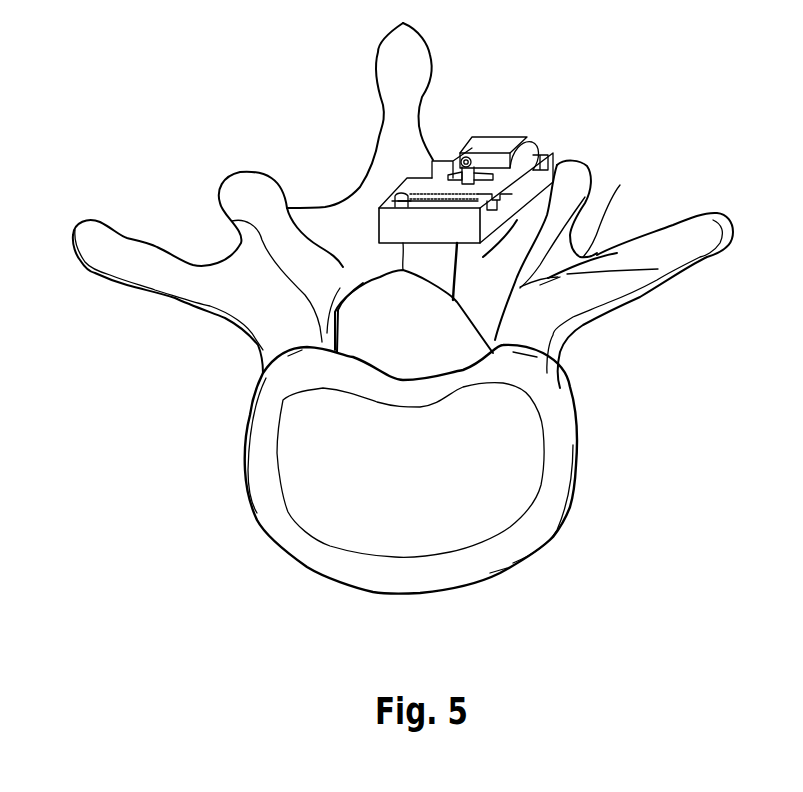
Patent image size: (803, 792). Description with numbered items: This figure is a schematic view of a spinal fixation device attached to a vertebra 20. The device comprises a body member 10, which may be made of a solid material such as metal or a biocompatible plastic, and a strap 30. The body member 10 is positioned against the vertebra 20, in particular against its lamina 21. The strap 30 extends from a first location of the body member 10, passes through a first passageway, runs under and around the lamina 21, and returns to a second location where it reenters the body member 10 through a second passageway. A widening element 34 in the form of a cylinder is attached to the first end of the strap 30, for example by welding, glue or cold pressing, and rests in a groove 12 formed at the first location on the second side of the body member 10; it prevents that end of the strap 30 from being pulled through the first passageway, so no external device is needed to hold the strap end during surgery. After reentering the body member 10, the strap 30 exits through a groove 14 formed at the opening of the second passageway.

The body member 10 is at (439, 144).
The groove 12 is at (384, 204).
The groove 14 is at (537, 152).
The vertebra 20 is at (530, 482).
The lamina 21 is at (620, 185).
The strap 30 is at (493, 147).
The widening element 34 is at (398, 195).